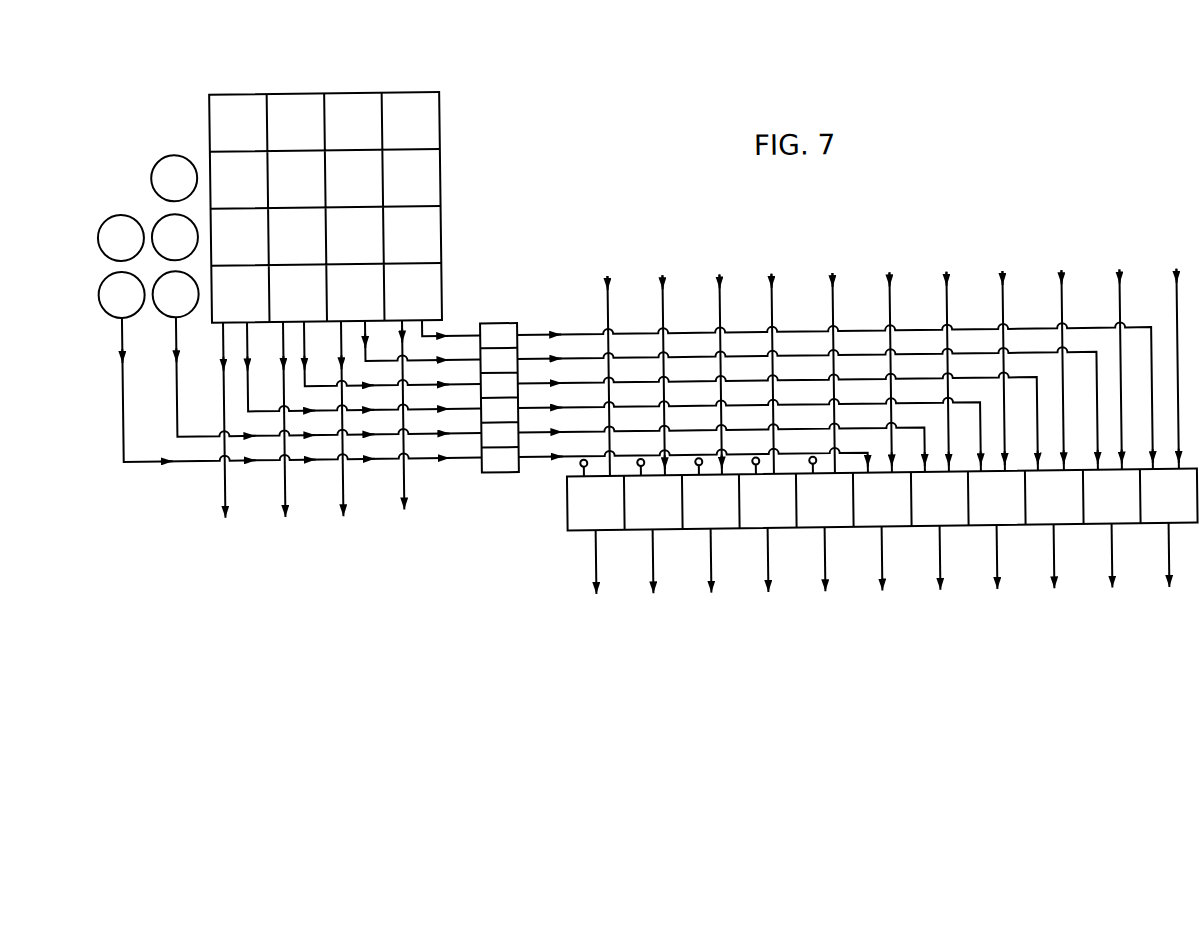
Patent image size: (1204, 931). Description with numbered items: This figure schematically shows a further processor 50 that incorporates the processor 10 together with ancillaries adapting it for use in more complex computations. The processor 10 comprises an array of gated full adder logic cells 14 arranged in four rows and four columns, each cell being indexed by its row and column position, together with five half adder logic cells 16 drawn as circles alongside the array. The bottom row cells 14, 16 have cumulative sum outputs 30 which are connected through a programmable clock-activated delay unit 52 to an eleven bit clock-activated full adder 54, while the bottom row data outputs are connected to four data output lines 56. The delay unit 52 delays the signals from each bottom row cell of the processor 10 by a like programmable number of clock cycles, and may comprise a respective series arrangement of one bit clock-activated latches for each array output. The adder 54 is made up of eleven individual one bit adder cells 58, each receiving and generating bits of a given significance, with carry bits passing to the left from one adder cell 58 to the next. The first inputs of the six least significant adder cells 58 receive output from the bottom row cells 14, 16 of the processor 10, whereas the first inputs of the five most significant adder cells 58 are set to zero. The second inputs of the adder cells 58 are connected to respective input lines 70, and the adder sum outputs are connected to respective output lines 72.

The processor 10 is at (291, 177).
The gated full adder logic cell 14 is at (325, 207).
The half adder logic cell 16 is at (148, 236).
The cumulative sum output 30 is at (121, 327).
The further processor 50 is at (603, 170).
The programmable clock-activated delay unit 52 is at (491, 471).
The eleven bit clock-activated full adder 54 is at (853, 508).
The data output line 56 is at (289, 438).
The one bit adder cell 58 is at (876, 490).
The input line 70 is at (895, 360).
The output line 72 is at (888, 583).